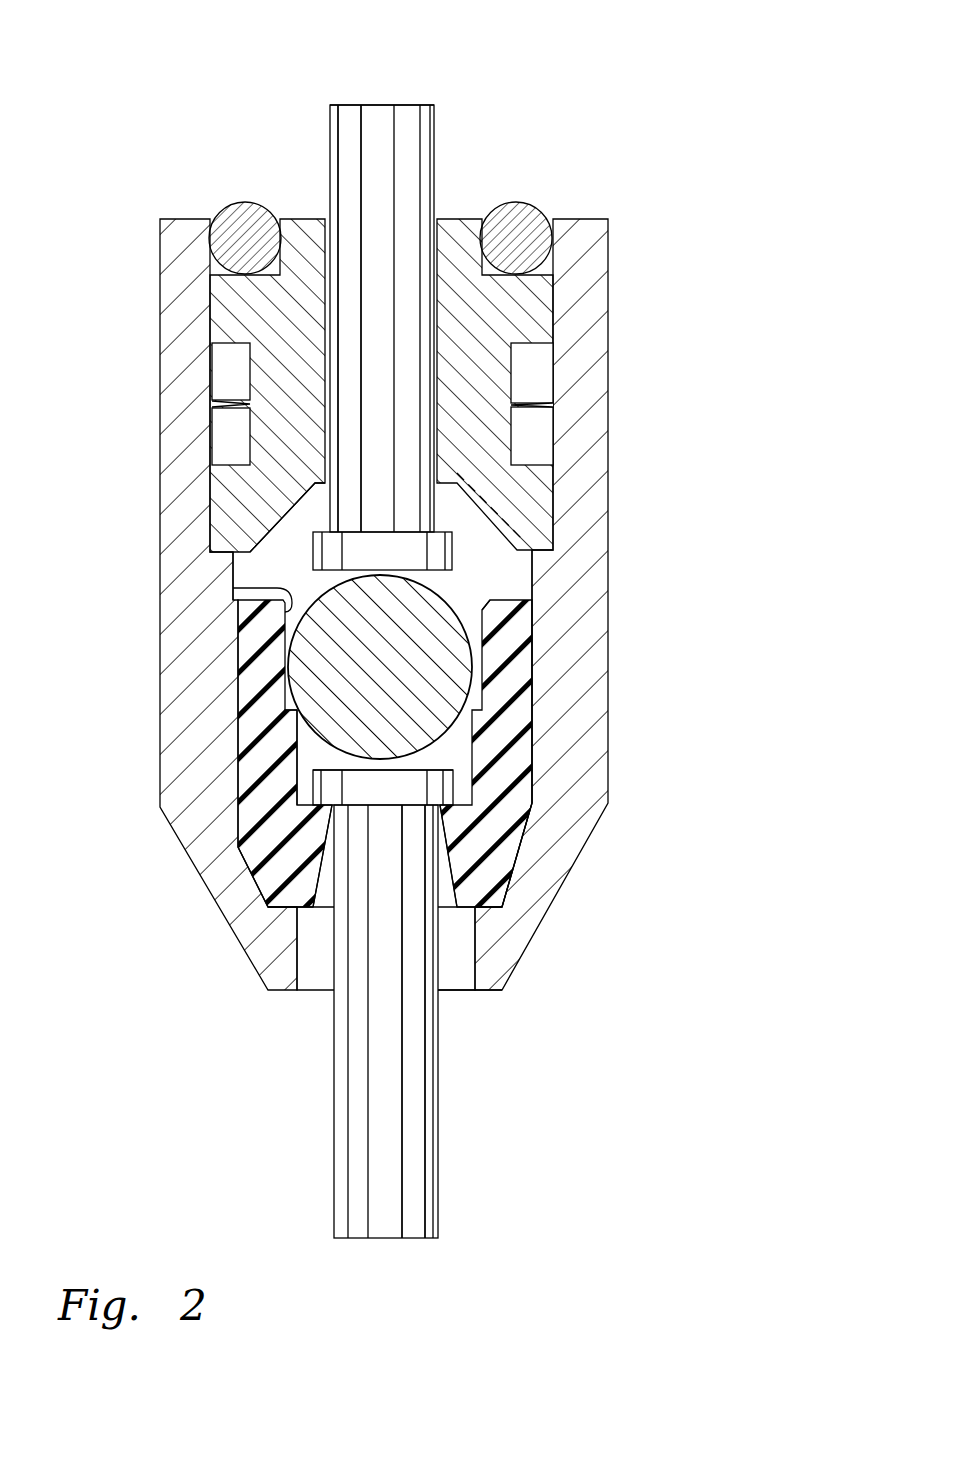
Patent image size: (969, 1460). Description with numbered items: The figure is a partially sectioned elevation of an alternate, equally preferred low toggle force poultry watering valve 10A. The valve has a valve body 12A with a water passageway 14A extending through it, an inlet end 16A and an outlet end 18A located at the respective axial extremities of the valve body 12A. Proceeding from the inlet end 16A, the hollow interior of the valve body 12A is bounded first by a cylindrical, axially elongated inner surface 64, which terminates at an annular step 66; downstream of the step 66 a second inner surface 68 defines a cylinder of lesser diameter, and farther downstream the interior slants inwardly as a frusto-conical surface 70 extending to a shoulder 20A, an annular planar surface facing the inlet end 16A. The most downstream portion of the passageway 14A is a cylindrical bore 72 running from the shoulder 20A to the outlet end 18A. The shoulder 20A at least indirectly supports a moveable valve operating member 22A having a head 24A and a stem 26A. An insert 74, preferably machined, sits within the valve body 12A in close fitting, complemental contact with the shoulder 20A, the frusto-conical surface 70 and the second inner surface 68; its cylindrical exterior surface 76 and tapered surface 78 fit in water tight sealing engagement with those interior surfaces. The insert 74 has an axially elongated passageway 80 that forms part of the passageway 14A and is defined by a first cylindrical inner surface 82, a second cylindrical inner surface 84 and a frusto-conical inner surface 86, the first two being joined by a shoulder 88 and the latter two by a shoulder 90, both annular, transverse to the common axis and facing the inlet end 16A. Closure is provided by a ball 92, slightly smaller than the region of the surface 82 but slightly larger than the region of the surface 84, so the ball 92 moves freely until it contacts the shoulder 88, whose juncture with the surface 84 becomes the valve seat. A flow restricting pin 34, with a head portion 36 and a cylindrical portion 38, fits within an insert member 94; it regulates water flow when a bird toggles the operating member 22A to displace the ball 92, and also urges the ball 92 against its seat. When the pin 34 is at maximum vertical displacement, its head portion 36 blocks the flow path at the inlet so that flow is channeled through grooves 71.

The low toggle force poultry watering valve 10A is at (507, 124).
The valve body 12A is at (598, 265).
The water passageway 14A is at (492, 565).
The inlet end 16A is at (320, 212).
The outlet end 18A is at (315, 997).
The shoulder 20A is at (494, 926).
The moveable valve operating member 22A is at (443, 1130).
The head 24A is at (327, 790).
The stem 26A is at (420, 1190).
The flow restricting pin 34 is at (440, 115).
The head portion 36 is at (325, 548).
The cylindrical portion 38 is at (382, 122).
The inner surface 64 is at (544, 365).
The annular step 66 is at (563, 498).
The second inner surface 68 is at (530, 575).
The frusto-conical surface 70 is at (531, 825).
The grooves 71 is at (323, 474).
The cylindrical bore 72 is at (473, 977).
The insert 74 is at (500, 775).
The cylindrical exterior surface 76 is at (535, 660).
The tapered surface 78 is at (501, 895).
The passageway 80 is at (300, 728).
The first cylindrical inner surface 82 is at (233, 588).
The second cylindrical inner surface 84 is at (305, 757).
The frusto-conical inner surface 86 is at (322, 871).
The shoulder 88 is at (537, 715).
The shoulder 90 is at (297, 795).
The ball 92 is at (307, 660).
The insert member 94 is at (455, 216).